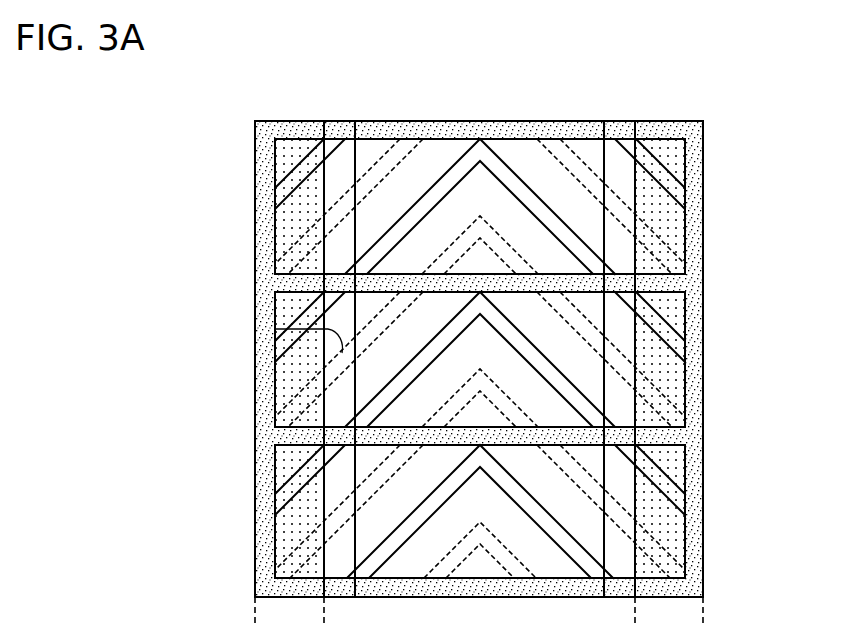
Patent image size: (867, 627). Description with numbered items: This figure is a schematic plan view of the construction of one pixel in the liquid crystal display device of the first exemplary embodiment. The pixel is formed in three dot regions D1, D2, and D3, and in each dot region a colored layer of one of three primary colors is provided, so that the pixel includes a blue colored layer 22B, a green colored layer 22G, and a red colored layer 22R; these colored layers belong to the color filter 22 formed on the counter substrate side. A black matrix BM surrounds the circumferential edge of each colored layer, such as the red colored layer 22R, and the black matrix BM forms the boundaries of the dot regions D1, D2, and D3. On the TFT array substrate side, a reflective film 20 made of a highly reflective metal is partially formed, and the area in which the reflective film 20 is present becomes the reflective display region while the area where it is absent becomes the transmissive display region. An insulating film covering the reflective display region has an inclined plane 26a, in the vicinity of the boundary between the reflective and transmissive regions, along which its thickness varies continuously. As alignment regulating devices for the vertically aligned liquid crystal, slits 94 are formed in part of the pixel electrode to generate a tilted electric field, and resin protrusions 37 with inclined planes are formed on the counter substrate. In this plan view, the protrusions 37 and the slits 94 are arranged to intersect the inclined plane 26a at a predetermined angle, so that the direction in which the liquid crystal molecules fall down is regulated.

The inclined plane 26a is at (338, 119).
The color filter 22 is at (704, 138).
The blue colored layer 22B is at (670, 223).
The reflective film 20 is at (491, 359).
The green colored layer 22G is at (672, 377).
The red colored layer 22R is at (665, 527).
The protrusions 37 is at (578, 473).
The slits 94 is at (557, 525).
The black matrix BM is at (262, 437).
The dot region D1 is at (300, 235).
The dot region D2 is at (292, 396).
The dot region D3 is at (292, 545).